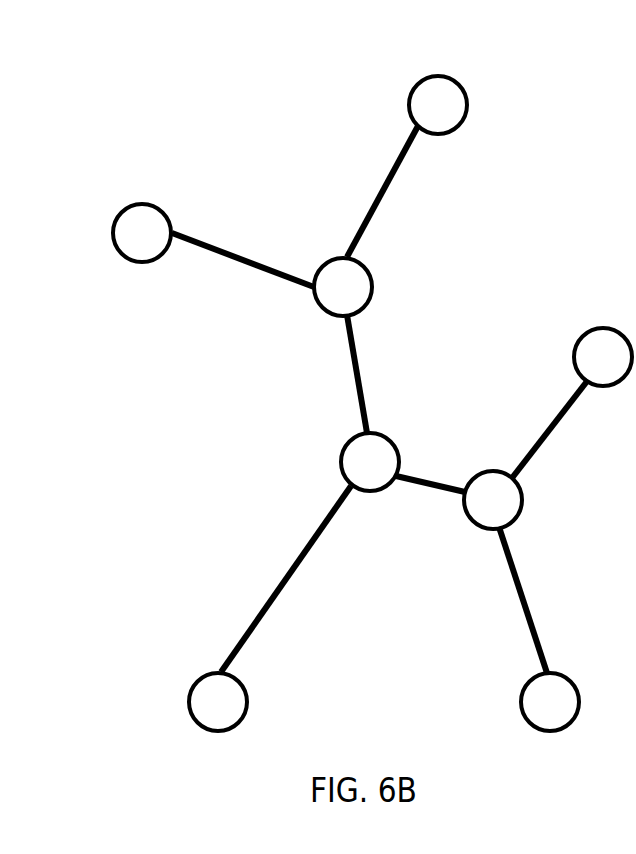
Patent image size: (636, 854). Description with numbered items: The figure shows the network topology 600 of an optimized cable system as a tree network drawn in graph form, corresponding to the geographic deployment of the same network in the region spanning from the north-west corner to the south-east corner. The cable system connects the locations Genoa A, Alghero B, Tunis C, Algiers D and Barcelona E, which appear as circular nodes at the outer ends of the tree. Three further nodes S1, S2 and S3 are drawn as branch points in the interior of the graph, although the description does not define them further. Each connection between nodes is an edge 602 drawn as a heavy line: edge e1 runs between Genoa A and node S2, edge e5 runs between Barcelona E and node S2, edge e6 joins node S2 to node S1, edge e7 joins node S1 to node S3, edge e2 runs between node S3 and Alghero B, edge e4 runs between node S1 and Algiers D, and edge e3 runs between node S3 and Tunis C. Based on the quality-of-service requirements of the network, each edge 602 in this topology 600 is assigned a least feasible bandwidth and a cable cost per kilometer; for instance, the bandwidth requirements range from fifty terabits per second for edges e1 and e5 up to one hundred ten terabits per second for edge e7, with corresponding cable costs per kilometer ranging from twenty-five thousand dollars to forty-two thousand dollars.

The network topology 600 is at (124, 134).
The edge 602 is at (397, 155).
The edge e1 is at (381, 191).
The edge e2 is at (550, 428).
The edge e3 is at (510, 600).
The edge e4 is at (285, 579).
The edge e5 is at (243, 272).
The edge e6 is at (336, 374).
The edge e7 is at (428, 505).
The Genoa location A is at (438, 105).
The Alghero location B is at (603, 357).
The Tunis location C is at (550, 702).
The Algiers location D is at (218, 702).
The Barcelona location E is at (142, 233).
The node S1 is at (370, 462).
The node S2 is at (343, 287).
The node S3 is at (493, 500).